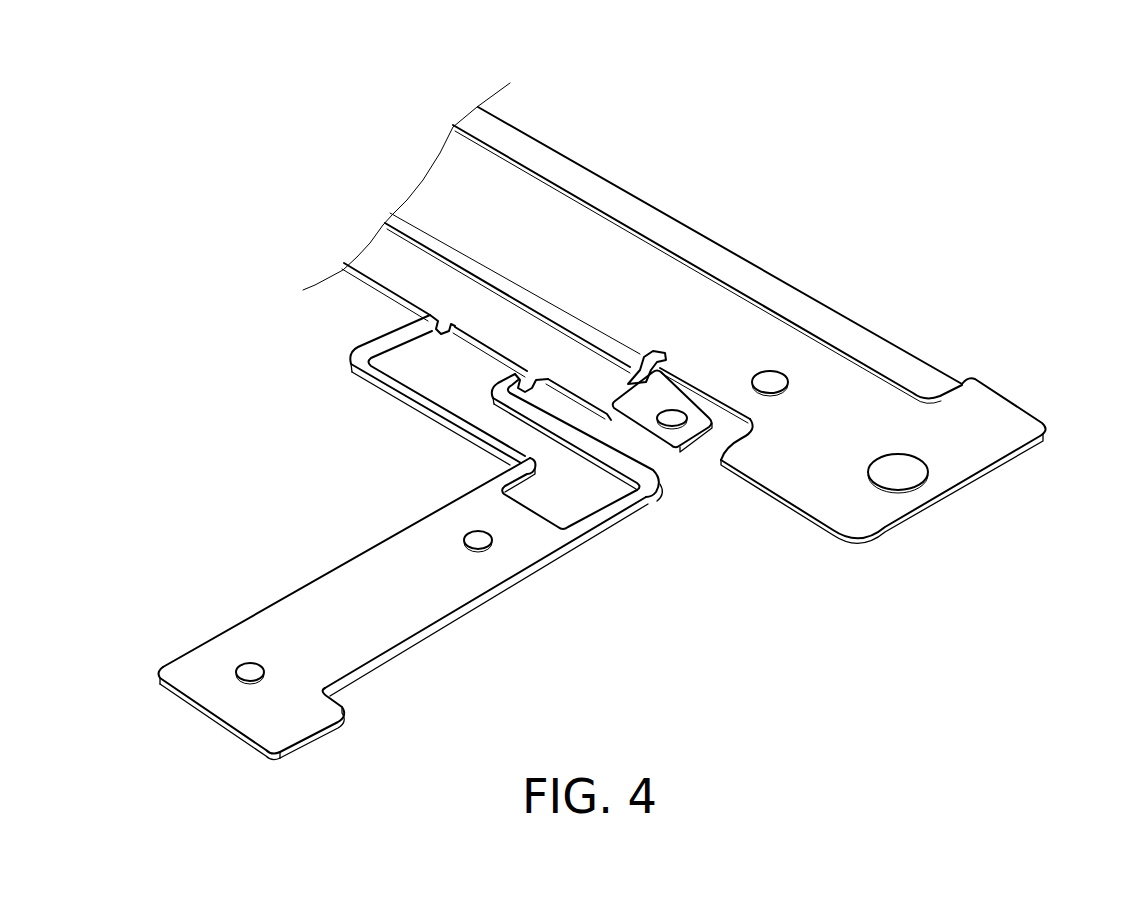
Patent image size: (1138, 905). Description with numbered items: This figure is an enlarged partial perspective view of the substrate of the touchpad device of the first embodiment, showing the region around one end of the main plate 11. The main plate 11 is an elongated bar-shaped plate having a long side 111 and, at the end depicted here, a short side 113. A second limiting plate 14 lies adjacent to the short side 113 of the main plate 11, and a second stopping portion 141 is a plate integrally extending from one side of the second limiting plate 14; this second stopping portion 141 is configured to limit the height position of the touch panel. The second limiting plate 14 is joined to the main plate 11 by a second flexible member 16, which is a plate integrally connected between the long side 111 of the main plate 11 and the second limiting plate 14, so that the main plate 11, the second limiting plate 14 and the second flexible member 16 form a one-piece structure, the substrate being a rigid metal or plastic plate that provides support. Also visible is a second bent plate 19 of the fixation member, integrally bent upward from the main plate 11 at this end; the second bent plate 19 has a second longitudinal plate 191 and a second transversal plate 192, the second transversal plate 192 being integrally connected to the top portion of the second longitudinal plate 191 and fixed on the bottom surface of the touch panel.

The main plate 11 is at (562, 220).
The long side 111 is at (366, 279).
The short side 113 is at (950, 500).
The second limiting plate 14 is at (403, 625).
The second stopping portion 141 is at (303, 723).
The second flexible member 16 is at (656, 522).
The second bent plate 19 is at (730, 315).
The second longitudinal plate 191 is at (687, 380).
The second transversal plate 192 is at (697, 423).